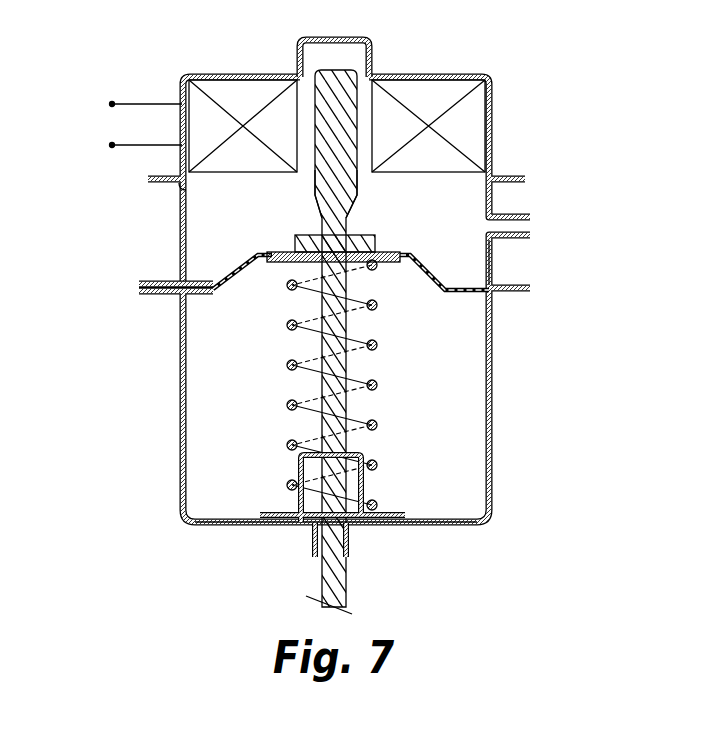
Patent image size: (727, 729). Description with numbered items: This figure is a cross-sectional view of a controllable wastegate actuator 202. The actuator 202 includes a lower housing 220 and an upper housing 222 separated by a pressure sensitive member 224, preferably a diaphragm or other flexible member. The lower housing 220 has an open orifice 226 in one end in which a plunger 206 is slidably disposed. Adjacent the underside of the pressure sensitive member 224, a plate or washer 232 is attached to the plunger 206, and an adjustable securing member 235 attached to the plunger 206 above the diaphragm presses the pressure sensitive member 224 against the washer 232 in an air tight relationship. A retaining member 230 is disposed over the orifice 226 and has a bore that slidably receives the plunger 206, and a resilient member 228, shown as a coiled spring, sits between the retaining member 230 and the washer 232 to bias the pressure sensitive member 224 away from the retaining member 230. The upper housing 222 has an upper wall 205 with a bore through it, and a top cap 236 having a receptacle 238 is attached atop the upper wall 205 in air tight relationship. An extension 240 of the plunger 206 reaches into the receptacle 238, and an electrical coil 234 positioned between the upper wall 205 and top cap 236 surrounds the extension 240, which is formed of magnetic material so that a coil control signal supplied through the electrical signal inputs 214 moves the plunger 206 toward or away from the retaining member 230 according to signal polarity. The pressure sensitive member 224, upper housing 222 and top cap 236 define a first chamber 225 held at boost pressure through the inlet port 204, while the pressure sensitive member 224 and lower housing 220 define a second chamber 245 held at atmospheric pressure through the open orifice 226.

The controllable wastegate actuator 202 is at (548, 371).
The inlet port 204 is at (532, 225).
The upper wall 205 is at (213, 183).
The plunger 206 is at (346, 580).
The electrical signal inputs 214 is at (112, 145).
The lower housing 220 is at (490, 358).
The upper housing 222 is at (492, 258).
The pressure sensitive member 224 is at (193, 284).
The first chamber 225 is at (463, 242).
The open orifice 226 is at (349, 558).
The resilient member 228 is at (372, 425).
The retaining member 230 is at (367, 480).
The washer 232 is at (390, 265).
The electrical coil 234 is at (470, 128).
The securing member 235 is at (356, 240).
The top cap 236 is at (432, 76).
The receptacle 238 is at (318, 45).
The extension 240 is at (313, 184).
The second chamber 245 is at (249, 388).